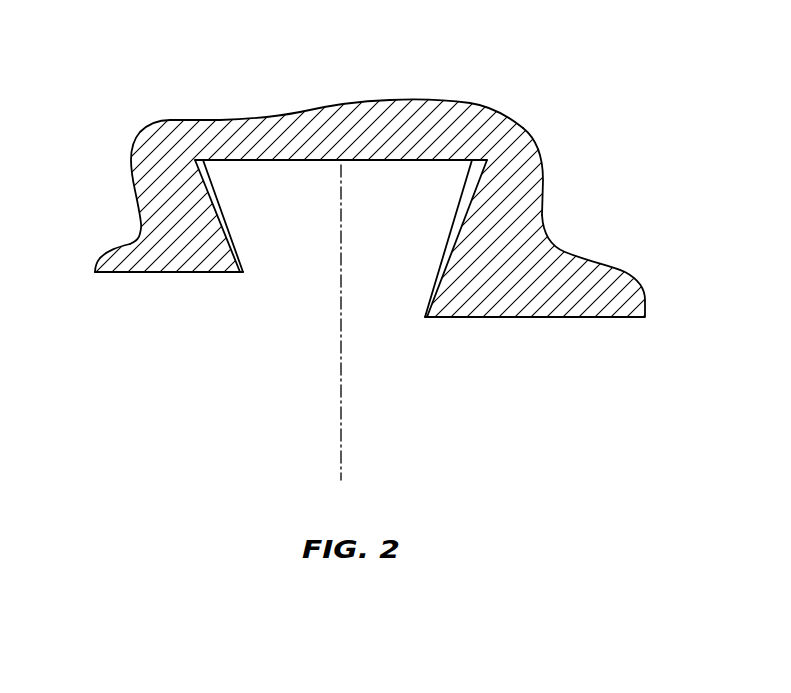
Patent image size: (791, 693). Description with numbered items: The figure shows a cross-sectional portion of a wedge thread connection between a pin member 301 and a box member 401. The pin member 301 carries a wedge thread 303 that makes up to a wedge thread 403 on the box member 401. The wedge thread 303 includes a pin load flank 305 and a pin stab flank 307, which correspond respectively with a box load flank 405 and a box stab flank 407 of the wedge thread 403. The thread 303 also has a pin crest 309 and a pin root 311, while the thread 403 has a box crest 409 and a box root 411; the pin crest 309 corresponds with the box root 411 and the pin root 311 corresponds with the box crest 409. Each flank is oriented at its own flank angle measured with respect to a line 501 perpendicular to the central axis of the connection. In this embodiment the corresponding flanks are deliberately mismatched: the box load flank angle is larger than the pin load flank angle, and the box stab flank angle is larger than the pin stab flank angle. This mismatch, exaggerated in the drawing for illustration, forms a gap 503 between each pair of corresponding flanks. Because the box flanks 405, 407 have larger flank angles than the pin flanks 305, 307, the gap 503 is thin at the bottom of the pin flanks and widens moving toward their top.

The pin member 301 is at (395, 242).
The wedge thread 303 is at (299, 210).
The pin load flank 305 is at (228, 233).
The pin stab flank 307 is at (438, 281).
The pin crest 309 is at (437, 163).
The pin root 311 is at (137, 272).
The box member 401 is at (535, 188).
The wedge thread 403 is at (115, 182).
The box load flank 405 is at (204, 170).
The box stab flank 407 is at (484, 170).
The box crest 409 is at (117, 262).
The box root 411 is at (363, 158).
The line 501 is at (342, 437).
The gap 503 is at (477, 158).